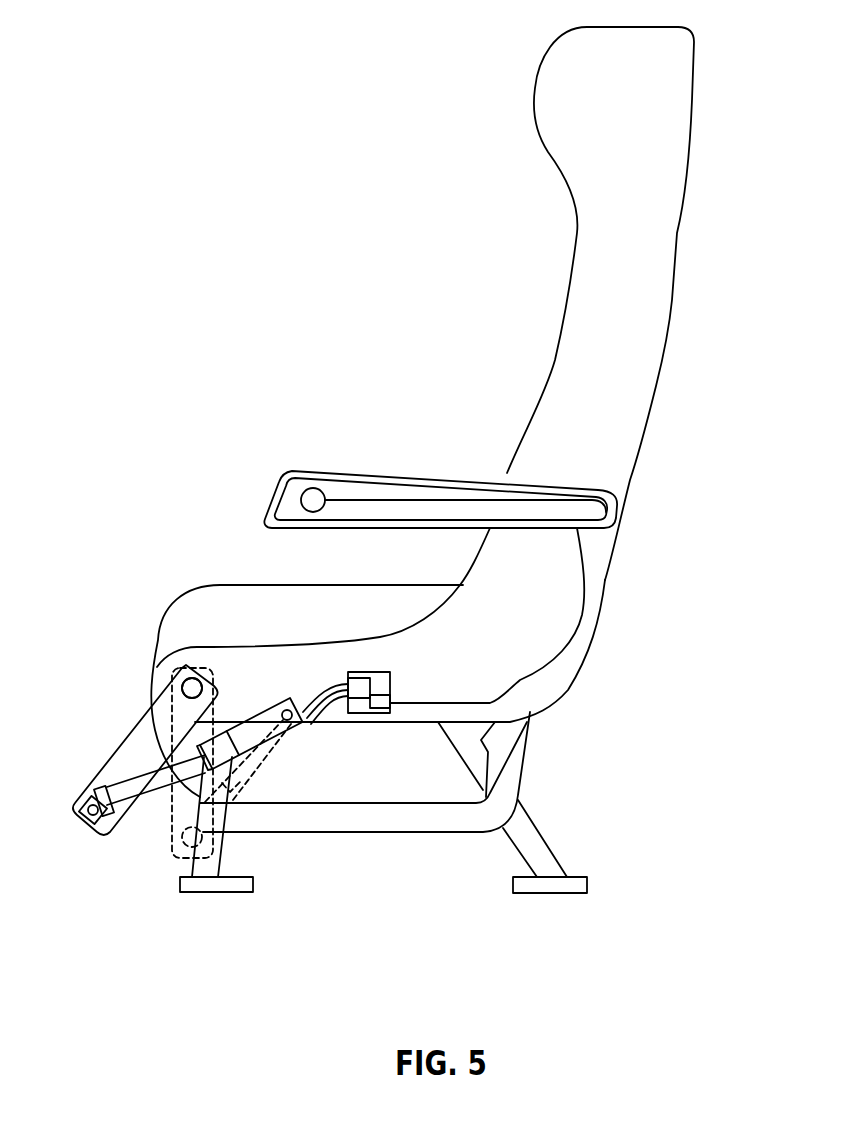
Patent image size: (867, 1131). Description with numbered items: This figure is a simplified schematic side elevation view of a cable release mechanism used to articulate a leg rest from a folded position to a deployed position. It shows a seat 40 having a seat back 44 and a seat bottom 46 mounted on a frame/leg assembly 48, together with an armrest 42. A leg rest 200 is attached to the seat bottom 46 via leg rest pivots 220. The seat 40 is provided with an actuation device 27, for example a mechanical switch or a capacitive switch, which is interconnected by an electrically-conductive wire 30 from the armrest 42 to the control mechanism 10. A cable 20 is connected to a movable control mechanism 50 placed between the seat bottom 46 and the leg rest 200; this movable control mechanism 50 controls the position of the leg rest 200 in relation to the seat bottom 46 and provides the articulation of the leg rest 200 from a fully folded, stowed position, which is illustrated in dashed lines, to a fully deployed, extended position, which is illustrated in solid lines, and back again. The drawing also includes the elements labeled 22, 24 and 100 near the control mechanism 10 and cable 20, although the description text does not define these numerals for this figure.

The control mechanism 10 is at (398, 717).
The cable 20 is at (317, 720).
The cable 22 is at (337, 717).
The connector 24 is at (382, 698).
The actuation device 27 is at (315, 490).
The electrically-conductive wire 30 is at (560, 642).
The seat 40 is at (330, 274).
The armrest 42 is at (435, 472).
The seat back 44 is at (662, 188).
The seat bottom 46 is at (193, 607).
The frame/leg assembly 48 is at (195, 790).
The movable control mechanism 50 is at (243, 724).
The control unit 100 is at (362, 682).
The leg rest 200 is at (140, 730).
The leg rest pivots 220 is at (188, 667).